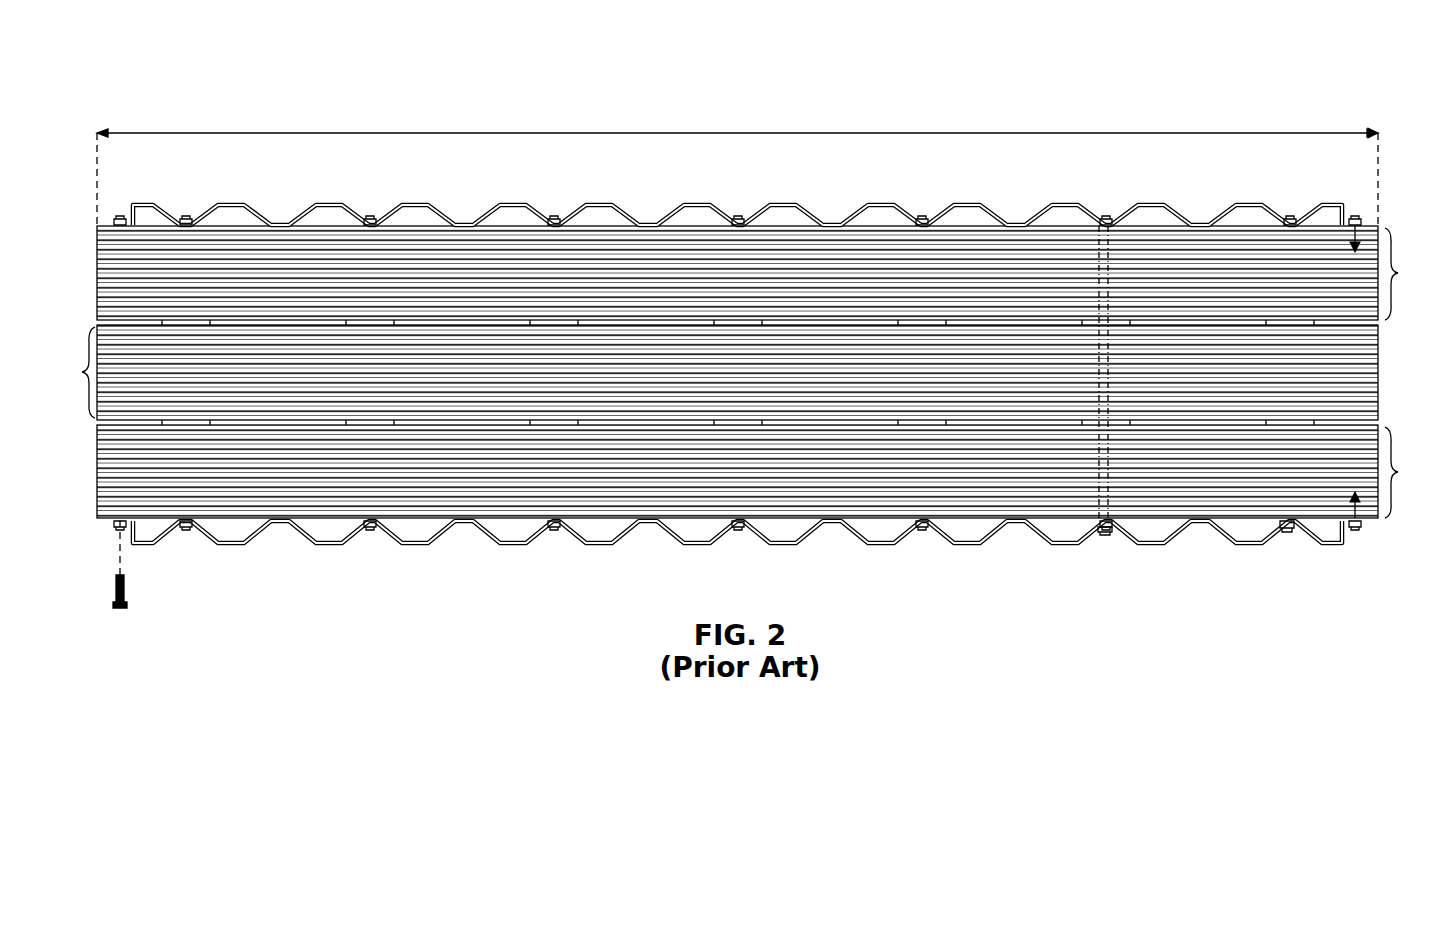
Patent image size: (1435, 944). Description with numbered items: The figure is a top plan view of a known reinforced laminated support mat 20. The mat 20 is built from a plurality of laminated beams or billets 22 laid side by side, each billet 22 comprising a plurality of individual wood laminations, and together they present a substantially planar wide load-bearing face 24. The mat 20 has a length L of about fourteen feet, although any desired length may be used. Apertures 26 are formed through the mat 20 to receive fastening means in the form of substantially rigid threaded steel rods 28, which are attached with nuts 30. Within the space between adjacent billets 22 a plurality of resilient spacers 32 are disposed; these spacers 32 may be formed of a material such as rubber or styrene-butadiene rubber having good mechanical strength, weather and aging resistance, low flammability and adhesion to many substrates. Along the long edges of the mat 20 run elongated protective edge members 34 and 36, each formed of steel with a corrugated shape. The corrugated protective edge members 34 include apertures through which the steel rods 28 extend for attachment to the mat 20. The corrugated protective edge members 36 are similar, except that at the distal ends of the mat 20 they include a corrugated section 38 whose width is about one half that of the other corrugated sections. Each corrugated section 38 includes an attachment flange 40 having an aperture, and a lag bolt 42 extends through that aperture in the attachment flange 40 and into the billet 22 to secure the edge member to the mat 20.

The reinforced laminated support mat 20 is at (524, 102).
The laminated beams or billets 22 is at (190, 278).
The load-bearing face 24 is at (744, 372).
The apertures 26 is at (1095, 488).
The threaded steel rods 28 is at (1108, 536).
The nuts 30 is at (1283, 534).
The resilient spacers 32 is at (737, 377).
The corrugated protective edge members 34 is at (416, 204).
The corrugated protective edge members 36 is at (260, 208).
The corrugated section 38 is at (146, 203).
The attachment flange 40 is at (112, 522).
The lag bolt 42 is at (1353, 216).
The length L is at (737, 128).